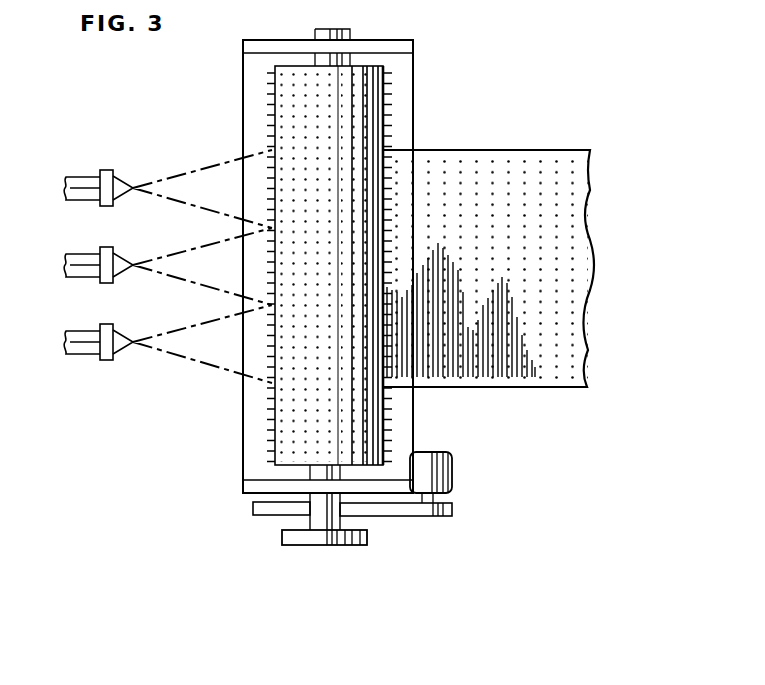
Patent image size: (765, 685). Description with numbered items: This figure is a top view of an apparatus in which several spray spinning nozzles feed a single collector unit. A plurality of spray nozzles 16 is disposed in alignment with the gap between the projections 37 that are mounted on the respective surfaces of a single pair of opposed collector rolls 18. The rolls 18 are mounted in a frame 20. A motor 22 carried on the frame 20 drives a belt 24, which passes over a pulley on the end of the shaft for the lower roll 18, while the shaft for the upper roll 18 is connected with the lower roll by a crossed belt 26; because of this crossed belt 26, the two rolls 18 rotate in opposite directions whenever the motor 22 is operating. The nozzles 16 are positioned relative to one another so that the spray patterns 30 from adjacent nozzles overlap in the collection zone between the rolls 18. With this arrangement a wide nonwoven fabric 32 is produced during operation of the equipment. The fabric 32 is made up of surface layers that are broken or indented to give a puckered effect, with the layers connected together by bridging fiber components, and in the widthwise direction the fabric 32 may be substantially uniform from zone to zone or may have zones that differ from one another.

The spray nozzles 16 is at (70, 191).
The collector rolls 18 is at (297, 103).
The frame 20 is at (257, 47).
The motor 22 is at (437, 477).
The belt 24 is at (277, 508).
The crossed belt 26 is at (320, 537).
The spray patterns 30 is at (160, 255).
The nonwoven fabric 32 is at (572, 273).
The projections 37 is at (388, 105).